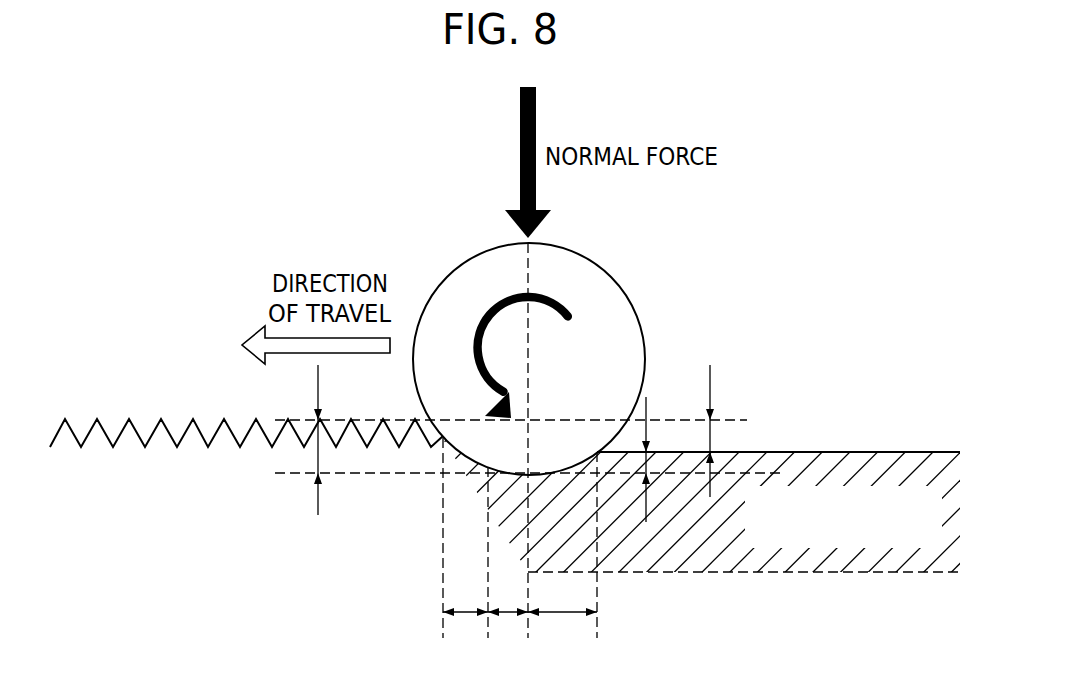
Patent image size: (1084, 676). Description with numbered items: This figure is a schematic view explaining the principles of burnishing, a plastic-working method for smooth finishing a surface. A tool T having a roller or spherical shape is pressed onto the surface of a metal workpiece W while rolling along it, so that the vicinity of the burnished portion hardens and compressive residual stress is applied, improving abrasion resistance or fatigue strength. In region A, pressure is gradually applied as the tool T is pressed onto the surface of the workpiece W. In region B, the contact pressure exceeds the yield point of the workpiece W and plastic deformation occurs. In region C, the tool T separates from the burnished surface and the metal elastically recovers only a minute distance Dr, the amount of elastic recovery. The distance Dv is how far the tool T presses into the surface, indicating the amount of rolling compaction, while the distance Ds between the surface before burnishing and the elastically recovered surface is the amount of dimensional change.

The tool T is at (628, 298).
The workpiece W is at (563, 491).
The distance Dv is at (295, 440).
The distance Ds is at (728, 431).
The distance Dr is at (663, 459).
The region A is at (465, 598).
The region B is at (508, 598).
The region C is at (562, 598).